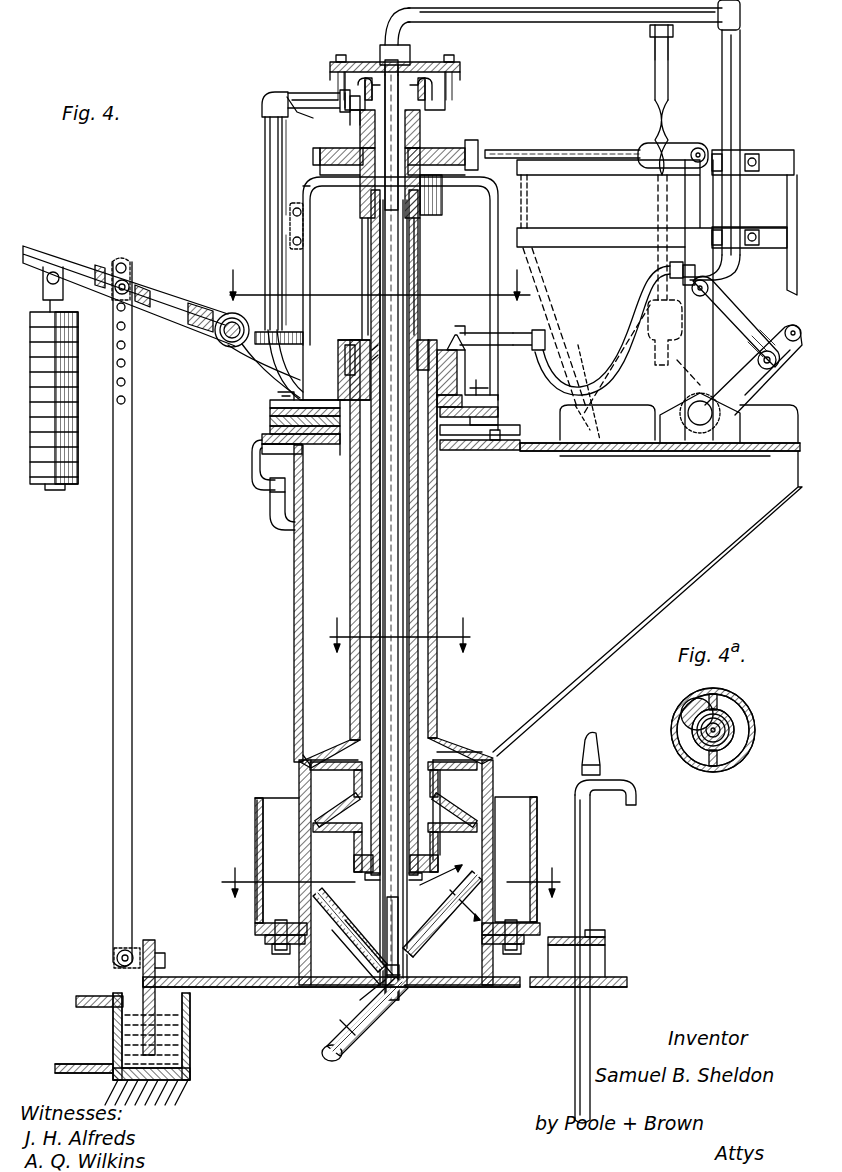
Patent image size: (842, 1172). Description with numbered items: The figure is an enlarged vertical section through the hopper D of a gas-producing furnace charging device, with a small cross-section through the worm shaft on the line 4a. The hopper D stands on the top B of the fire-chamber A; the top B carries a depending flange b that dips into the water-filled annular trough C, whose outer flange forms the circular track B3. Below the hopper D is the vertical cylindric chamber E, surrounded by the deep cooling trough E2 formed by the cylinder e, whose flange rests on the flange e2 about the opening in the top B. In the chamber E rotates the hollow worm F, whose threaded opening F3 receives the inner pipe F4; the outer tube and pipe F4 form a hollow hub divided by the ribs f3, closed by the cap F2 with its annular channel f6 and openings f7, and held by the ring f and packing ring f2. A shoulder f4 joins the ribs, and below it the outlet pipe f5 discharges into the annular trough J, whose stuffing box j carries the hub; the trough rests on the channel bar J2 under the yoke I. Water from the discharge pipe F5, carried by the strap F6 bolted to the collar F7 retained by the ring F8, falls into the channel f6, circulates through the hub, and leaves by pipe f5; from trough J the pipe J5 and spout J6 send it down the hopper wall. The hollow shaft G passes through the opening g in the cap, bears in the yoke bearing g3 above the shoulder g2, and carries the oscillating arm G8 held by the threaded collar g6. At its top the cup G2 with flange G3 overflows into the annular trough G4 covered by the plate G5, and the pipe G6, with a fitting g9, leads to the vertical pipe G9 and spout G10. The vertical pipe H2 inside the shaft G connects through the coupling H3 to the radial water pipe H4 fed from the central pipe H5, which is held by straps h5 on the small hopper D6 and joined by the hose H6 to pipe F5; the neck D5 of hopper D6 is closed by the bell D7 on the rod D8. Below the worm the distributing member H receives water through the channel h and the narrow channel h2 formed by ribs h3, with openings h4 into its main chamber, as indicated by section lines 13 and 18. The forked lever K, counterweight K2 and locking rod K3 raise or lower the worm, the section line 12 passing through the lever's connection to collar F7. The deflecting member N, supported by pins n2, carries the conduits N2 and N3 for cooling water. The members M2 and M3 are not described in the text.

In FIG. 4, the radially extending water-pipe H4 is at (512, 22).
In FIG. 4, the coupling H3 is at (410, 55).
In FIG. 4, the feed pipe H5 is at (740, 62).
In FIG. 4, the vertical operating rod D8 is at (655, 77).
In FIG. 4, the lever rod M3 is at (600, 150).
In FIG. 4, the straps h5 is at (748, 178).
In FIG. 4, the smaller hopper D6 is at (652, 300).
In FIG. 4, the angled lever M2 is at (752, 318).
In FIG. 4, the flexible tube or hose H6 is at (610, 380).
In FIG. 4, the neck D5 is at (585, 440).
In FIG. 4, the valve or bell D7 is at (665, 445).
In FIG. 4, the hopper D is at (548, 602).
In FIG. 4, the yoke I is at (290, 236).
In FIG. 4, the cup G2 is at (432, 72).
In FIG. 4, the curved flange G3 is at (440, 96).
In FIG. 4, the annular trough G4 is at (425, 120).
In FIG. 4, the oscillating arm G8 is at (415, 148).
In FIG. 4, the plate G5 is at (375, 62).
In FIG. 4, the pipe G6 is at (320, 92).
In FIG. 4, the threaded collar g6 is at (352, 119).
In FIG. 4, the gauge connection g9 is at (287, 97).
In FIG. 4, the vertical pipe G9 is at (264, 140).
In FIG. 4, the bearing g3 is at (303, 188).
In FIG. 4, the shoulder g2 is at (362, 208).
In FIG. 4, the section line 12— 12 is at (377, 287).
In FIG. 4, the hollow shaft G is at (410, 524).
In FIG. 4A, the hollow shaft G is at (722, 737).
In FIG. 4, the inner pipe F4 is at (368, 556).
In FIG. 4A, the inner pipe F4 is at (700, 732).
In FIG. 4, the cap F2 is at (345, 340).
In FIG. 4, the annular channel f6 is at (352, 340).
In FIG. 4, the openings f7 is at (372, 350).
In FIG. 4, the packing ring f2 is at (420, 338).
In FIG. 4, the discharge pipe F5 is at (455, 350).
In FIG. 4, the strap F6 is at (455, 335).
In FIG. 4, the ring f is at (450, 395).
In FIG. 4, the collar F7 is at (296, 400).
In FIG. 4, the ring F8 is at (272, 420).
In FIG. 4, the small outlet pipe f5 is at (270, 430).
In FIG. 4, the pipe J5 is at (262, 444).
In FIG. 4, the discharge spout J6 is at (268, 484).
In FIG. 4, the discharge spout G10 is at (272, 505).
In FIG. 4, the shoulder f4 is at (340, 455).
In FIG. 4, the annular trough J is at (460, 440).
In FIG. 4, the stuffing box j is at (440, 440).
In FIG. 4, the annular channel bar J2 is at (508, 450).
In FIG. 4, the forked lever K is at (172, 330).
In FIG. 4, the counterweight K2 is at (75, 485).
In FIG. 4, the vertical rod K3 is at (133, 515).
In FIG. 4, the openings h4 is at (126, 364).
In FIG. 4, the upper channel h is at (225, 338).
In FIG. 4, the annular opening g is at (245, 352).
In FIG. 4, the section line 4a— 4a is at (397, 635).
In FIG. 4, the worm F is at (446, 752).
In FIG. 4, the vertical cylindric chamber E is at (297, 782).
In FIG. 4, the deep annular trough E2 is at (275, 825).
In FIG. 4, the vertical cylinder e is at (253, 840).
In FIG. 4, the horizontal flange e2 is at (268, 945).
In FIG. 4, the section line 13— 13 is at (390, 882).
In FIG. 4, the vertical pipe H2 is at (493, 774).
In FIG. 4A, the vertical pipe H2 is at (728, 724).
In FIG. 4, the annular threaded opening F3 is at (370, 875).
In FIG. 4, the section line 18— 18 is at (453, 910).
In FIG. 4, the distributing member H is at (372, 1005).
In FIG. 4, the ribs h3 is at (338, 1032).
In FIG. 4, the narrow channel h2 is at (370, 1005).
In FIG. 4, the fire-chamber A is at (467, 1075).
In FIG. 4, the top of the fire chamber B is at (625, 977).
In FIG. 4, the circular track B3 is at (88, 996).
In FIG. 4, the annular trough C is at (132, 1049).
In FIG. 4, the annular vertical flange b is at (113, 1028).
In FIG. 4, the deflecting member N is at (590, 856).
In FIG. 4, the vertical conduit N3 is at (636, 800).
In FIG. 4, the internal passageway or conduit N2 is at (580, 778).
In FIG. 4, the pins n2 is at (592, 937).
In FIG. 4A, the ribs f3 is at (718, 697).